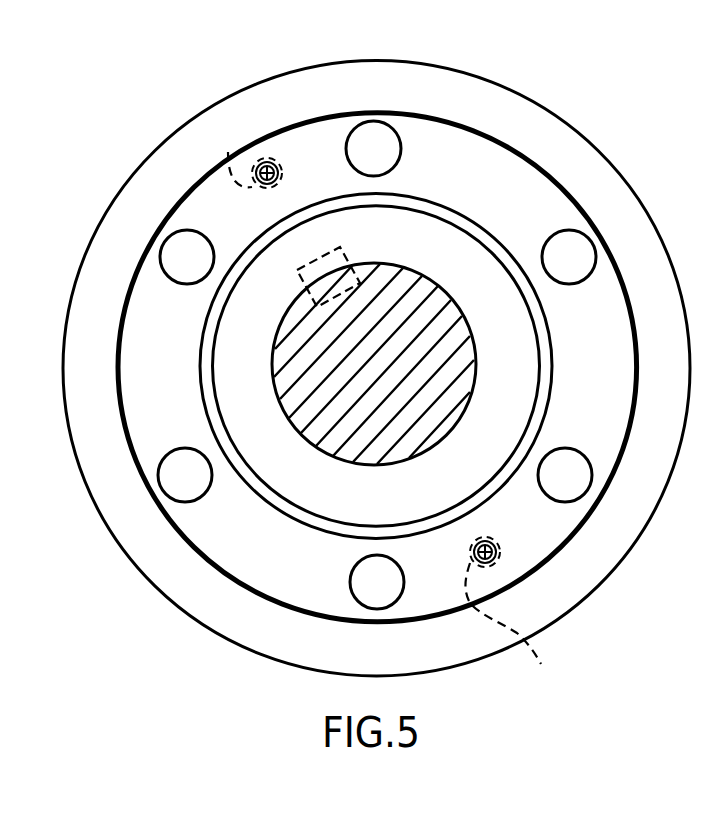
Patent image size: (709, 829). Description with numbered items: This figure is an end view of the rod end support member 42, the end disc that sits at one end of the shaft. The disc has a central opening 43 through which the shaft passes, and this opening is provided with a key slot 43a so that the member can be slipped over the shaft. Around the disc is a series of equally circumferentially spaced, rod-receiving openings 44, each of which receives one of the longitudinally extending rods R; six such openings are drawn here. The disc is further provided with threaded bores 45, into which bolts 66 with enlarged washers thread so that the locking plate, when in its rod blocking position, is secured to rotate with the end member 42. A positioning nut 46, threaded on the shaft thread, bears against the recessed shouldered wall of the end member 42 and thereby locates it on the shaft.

The rod end support member 42 is at (528, 120).
The central opening 43 is at (346, 456).
The key slot 43a is at (345, 245).
The rod-receiving openings 44 is at (400, 163).
The threaded bores 45 is at (228, 151).
The positioning nut 46 is at (476, 430).
The bolts 66 is at (275, 168).
The rods R is at (376, 124).